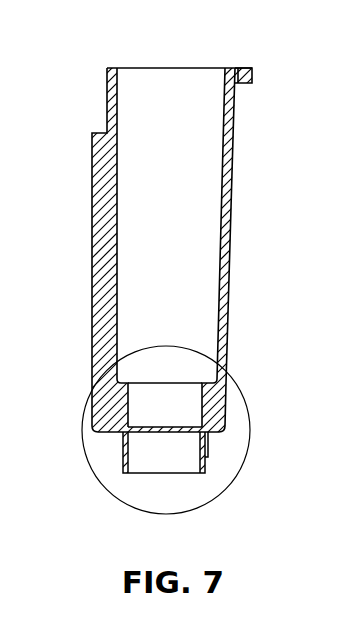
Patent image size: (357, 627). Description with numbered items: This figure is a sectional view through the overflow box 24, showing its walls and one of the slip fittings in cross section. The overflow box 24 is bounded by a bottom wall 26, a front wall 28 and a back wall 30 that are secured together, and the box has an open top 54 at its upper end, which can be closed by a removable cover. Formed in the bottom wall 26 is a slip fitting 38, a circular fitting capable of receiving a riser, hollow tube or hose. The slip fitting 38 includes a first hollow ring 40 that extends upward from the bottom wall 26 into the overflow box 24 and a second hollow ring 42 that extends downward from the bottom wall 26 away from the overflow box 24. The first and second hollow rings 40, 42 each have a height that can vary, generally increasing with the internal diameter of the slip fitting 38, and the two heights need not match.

The overflow box 24 is at (272, 66).
The bottom wall 26 is at (108, 433).
The front wall 28 is at (92, 242).
The back wall 30 is at (232, 245).
The slip fitting 38 is at (181, 329).
The first hollow ring 40 is at (128, 402).
The second hollow ring 42 is at (122, 471).
The open top 54 is at (128, 67).